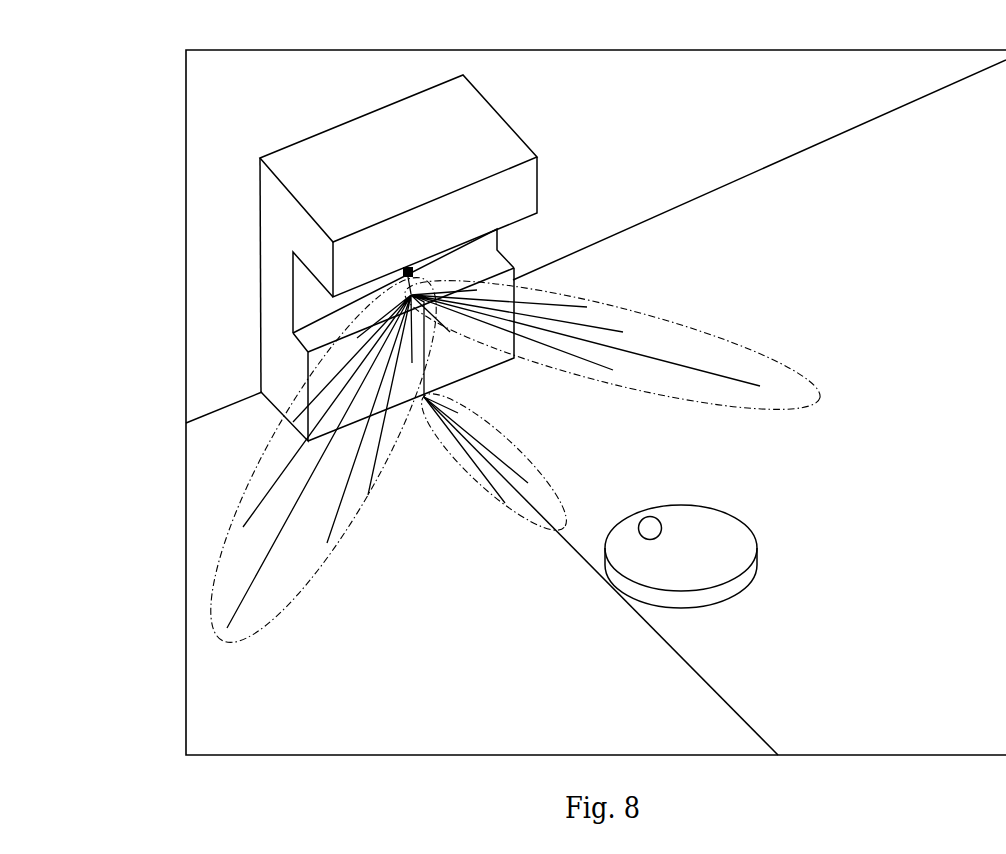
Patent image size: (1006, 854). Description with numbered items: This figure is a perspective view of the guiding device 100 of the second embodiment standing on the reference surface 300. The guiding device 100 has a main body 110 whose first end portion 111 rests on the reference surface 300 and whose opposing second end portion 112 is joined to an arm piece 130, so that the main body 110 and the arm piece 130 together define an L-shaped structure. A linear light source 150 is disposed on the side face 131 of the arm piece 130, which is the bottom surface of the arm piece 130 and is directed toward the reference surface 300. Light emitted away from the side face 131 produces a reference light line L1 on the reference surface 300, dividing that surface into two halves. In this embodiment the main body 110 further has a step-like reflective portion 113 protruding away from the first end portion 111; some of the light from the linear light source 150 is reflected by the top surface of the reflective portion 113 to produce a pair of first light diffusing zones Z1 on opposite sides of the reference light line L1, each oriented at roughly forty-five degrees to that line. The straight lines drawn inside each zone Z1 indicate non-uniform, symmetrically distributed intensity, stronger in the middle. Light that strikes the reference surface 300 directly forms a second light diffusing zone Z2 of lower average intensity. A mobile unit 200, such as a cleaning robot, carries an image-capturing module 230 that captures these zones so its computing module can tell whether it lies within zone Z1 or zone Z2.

The guiding device 100 is at (538, 116).
The main body 110 is at (262, 328).
The first end portion 111 is at (272, 377).
The second end portion 112 is at (297, 200).
The reflective portion 113 is at (290, 342).
The arm piece 130 is at (385, 147).
The side face 131 is at (290, 280).
The linear light source 150 is at (414, 274).
The mobile unit 200 is at (717, 522).
The image-capturing module 230 is at (649, 517).
The reference surface 300 is at (240, 710).
The first light diffusing zone Z1 is at (313, 573).
The second light diffusing zone Z2 is at (478, 482).
The reference light line L1 is at (677, 650).